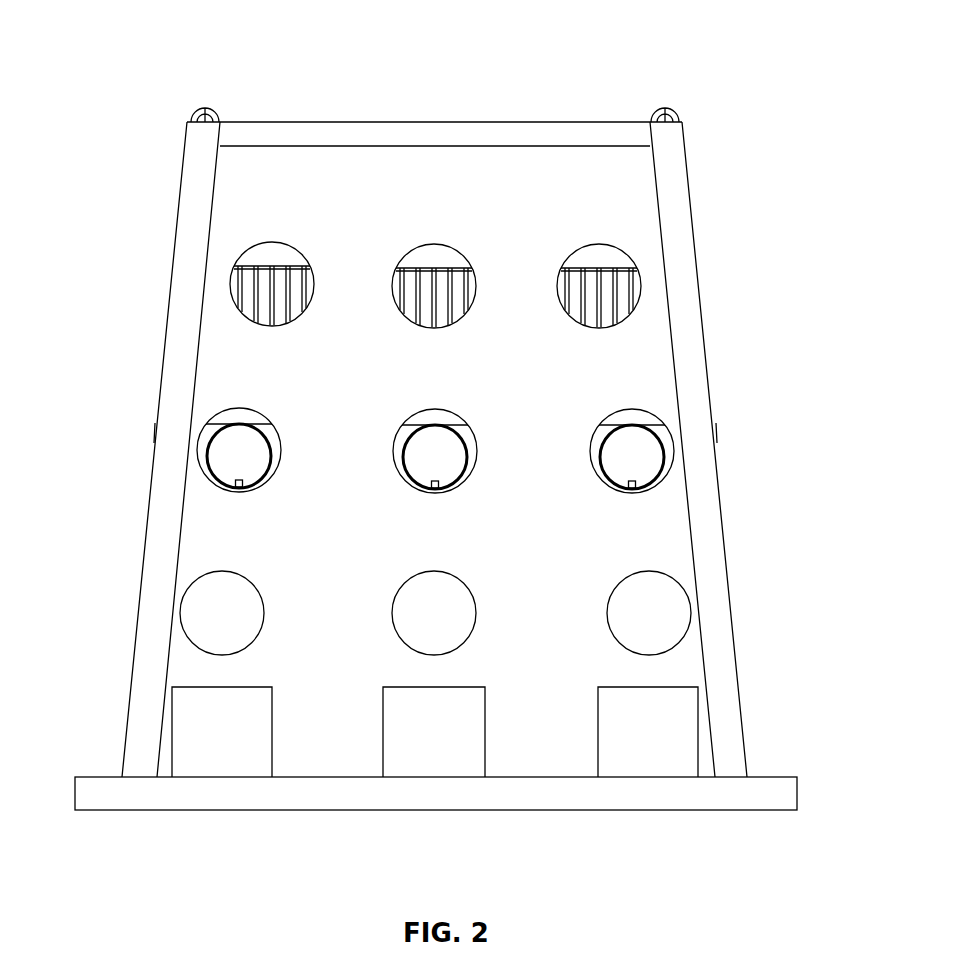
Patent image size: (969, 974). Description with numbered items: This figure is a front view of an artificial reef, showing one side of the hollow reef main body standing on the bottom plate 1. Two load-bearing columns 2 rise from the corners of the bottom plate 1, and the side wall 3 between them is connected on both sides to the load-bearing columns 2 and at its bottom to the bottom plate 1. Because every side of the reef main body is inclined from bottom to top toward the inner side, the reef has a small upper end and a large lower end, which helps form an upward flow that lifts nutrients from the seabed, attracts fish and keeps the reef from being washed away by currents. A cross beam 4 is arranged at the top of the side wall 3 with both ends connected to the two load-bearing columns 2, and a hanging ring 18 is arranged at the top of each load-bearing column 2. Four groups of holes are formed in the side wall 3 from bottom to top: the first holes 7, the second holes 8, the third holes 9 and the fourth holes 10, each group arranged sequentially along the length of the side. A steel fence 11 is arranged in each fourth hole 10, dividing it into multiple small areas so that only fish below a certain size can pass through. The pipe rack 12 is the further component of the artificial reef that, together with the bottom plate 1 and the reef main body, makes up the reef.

The bottom plate 1 is at (725, 793).
The load-bearing column 2 is at (688, 338).
The side wall 3 is at (645, 533).
The cross beam 4 is at (498, 130).
The first hole 7 is at (190, 715).
The second hole 8 is at (212, 613).
The third hole 9 is at (242, 415).
The fourth hole 10 is at (262, 258).
The fence 11 is at (253, 292).
The pipe rack 12 is at (210, 460).
The hanging ring 18 is at (672, 112).